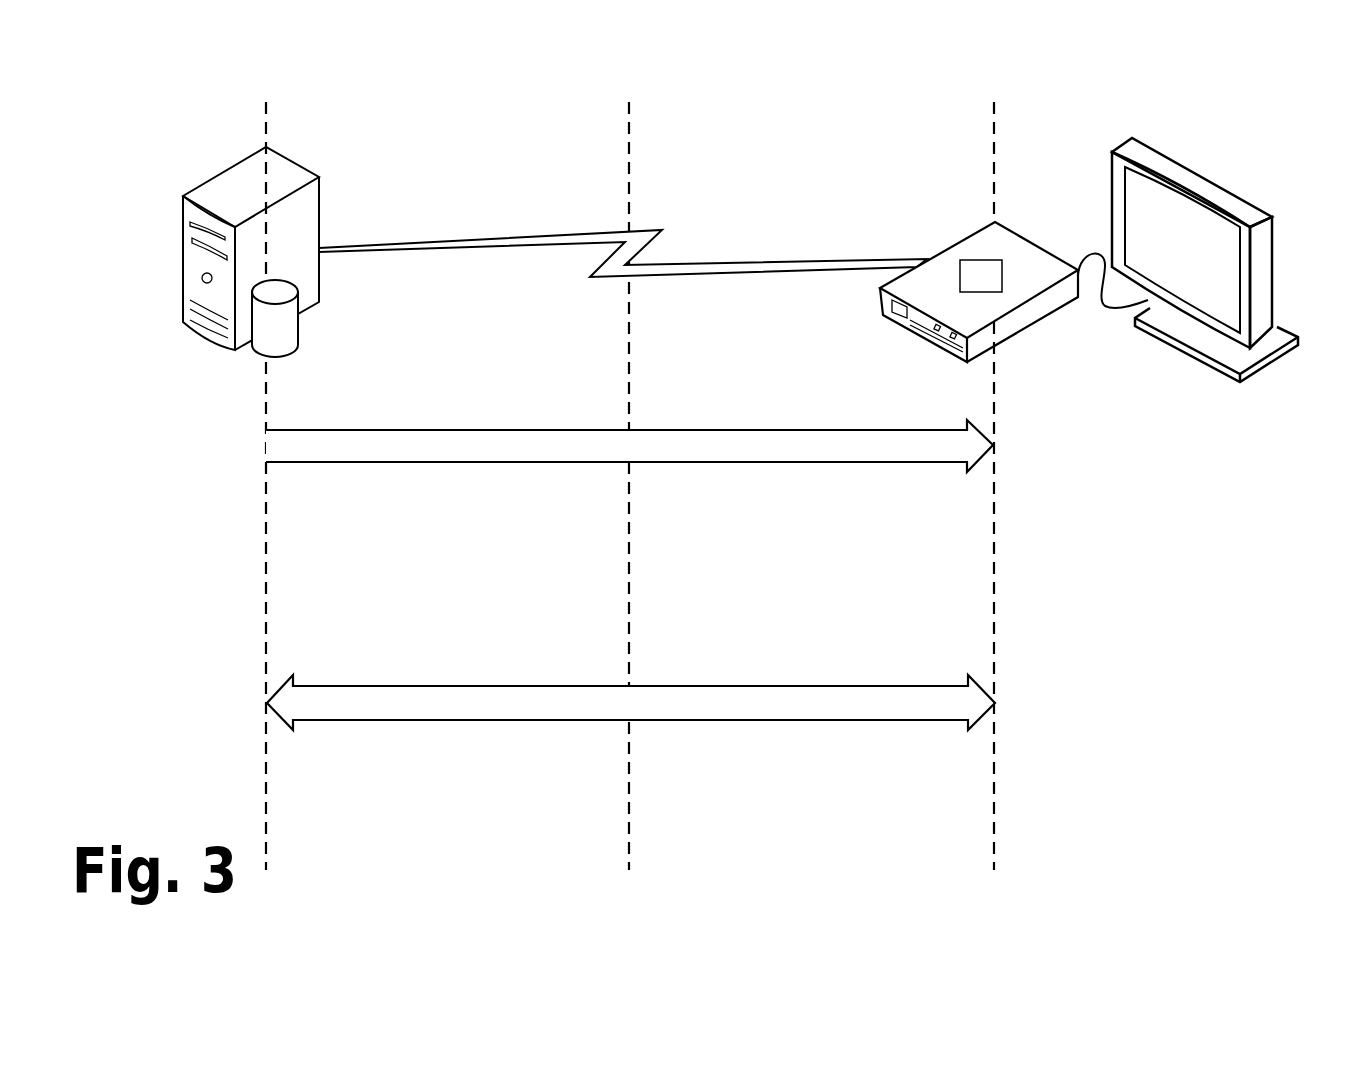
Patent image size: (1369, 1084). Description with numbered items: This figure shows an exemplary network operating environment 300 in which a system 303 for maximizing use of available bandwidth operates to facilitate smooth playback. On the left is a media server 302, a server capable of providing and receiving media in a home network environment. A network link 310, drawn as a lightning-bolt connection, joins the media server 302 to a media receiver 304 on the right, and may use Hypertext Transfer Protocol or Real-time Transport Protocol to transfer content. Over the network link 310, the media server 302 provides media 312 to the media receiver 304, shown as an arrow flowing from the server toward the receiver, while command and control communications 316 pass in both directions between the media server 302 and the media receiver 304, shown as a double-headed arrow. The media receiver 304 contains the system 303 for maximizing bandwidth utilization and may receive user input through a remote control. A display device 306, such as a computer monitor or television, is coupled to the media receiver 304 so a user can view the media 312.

The network operating environment 300 is at (1196, 818).
The media server 302 is at (223, 180).
The system for maximizing bandwidth utilization 303 is at (983, 260).
The media receiver 304 is at (1023, 317).
The display device 306 is at (1267, 260).
The network link 310 is at (480, 237).
The media 312 is at (420, 463).
The command and control communications 316 is at (385, 721).